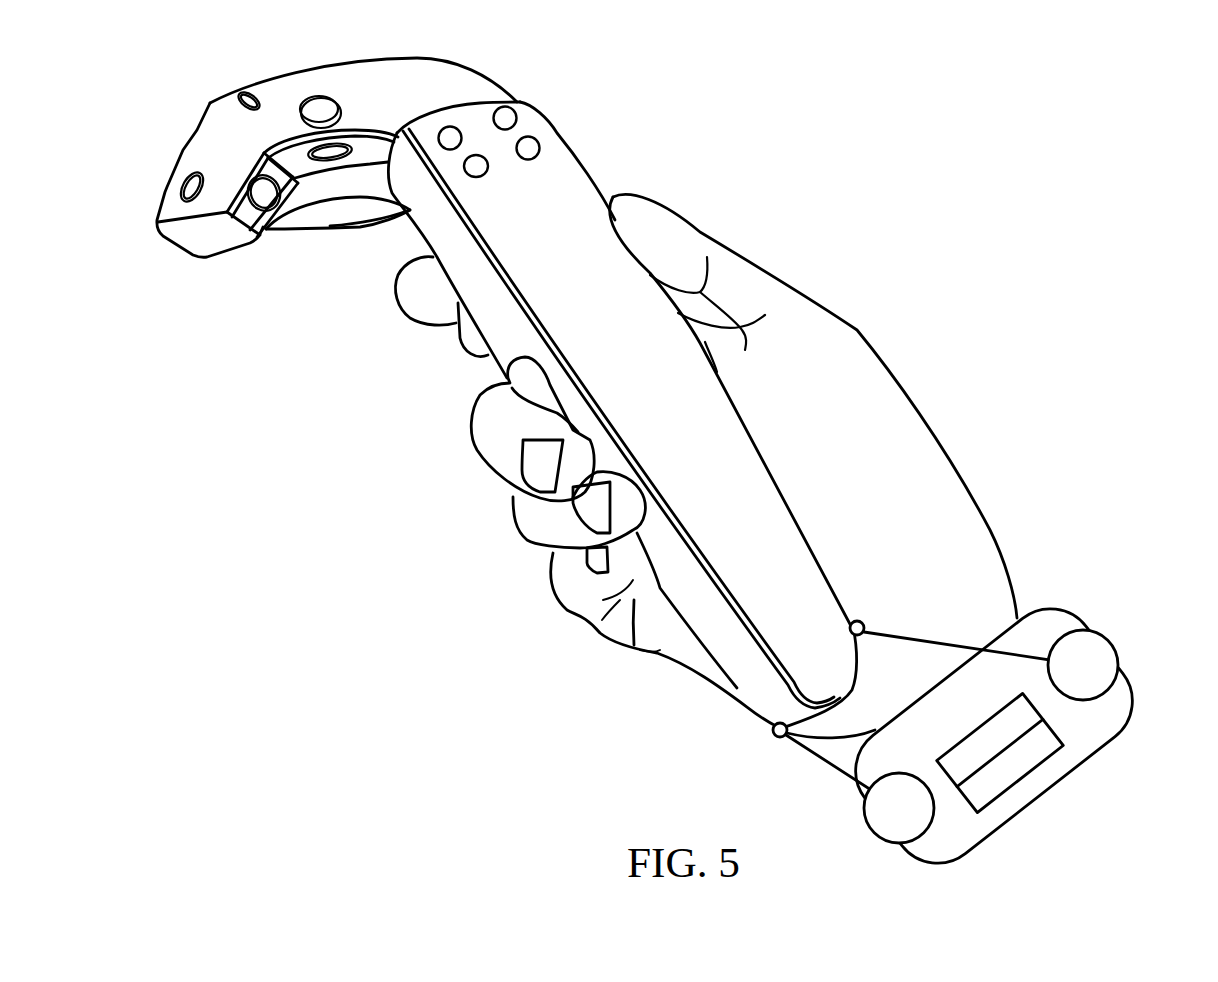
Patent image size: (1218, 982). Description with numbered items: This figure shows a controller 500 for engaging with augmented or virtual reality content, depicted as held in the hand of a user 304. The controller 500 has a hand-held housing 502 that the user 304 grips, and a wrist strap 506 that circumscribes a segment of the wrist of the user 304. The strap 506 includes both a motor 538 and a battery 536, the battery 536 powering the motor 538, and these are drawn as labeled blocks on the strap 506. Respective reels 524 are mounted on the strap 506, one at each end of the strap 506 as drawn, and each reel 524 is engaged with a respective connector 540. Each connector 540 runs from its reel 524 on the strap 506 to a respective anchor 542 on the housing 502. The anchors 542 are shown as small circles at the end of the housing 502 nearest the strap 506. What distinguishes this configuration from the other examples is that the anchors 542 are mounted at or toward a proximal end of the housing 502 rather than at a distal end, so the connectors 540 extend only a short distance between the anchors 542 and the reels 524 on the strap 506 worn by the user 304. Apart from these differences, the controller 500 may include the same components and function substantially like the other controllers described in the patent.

The controller 500 is at (151, 58).
The hand-held housing 502 is at (557, 133).
The user 304 is at (706, 465).
The wrist strap 506 is at (982, 830).
The reels 524 is at (1118, 667).
The battery 536 is at (1035, 775).
The motor 538 is at (1042, 707).
The connector 540 is at (975, 648).
The anchors 542 is at (863, 622).